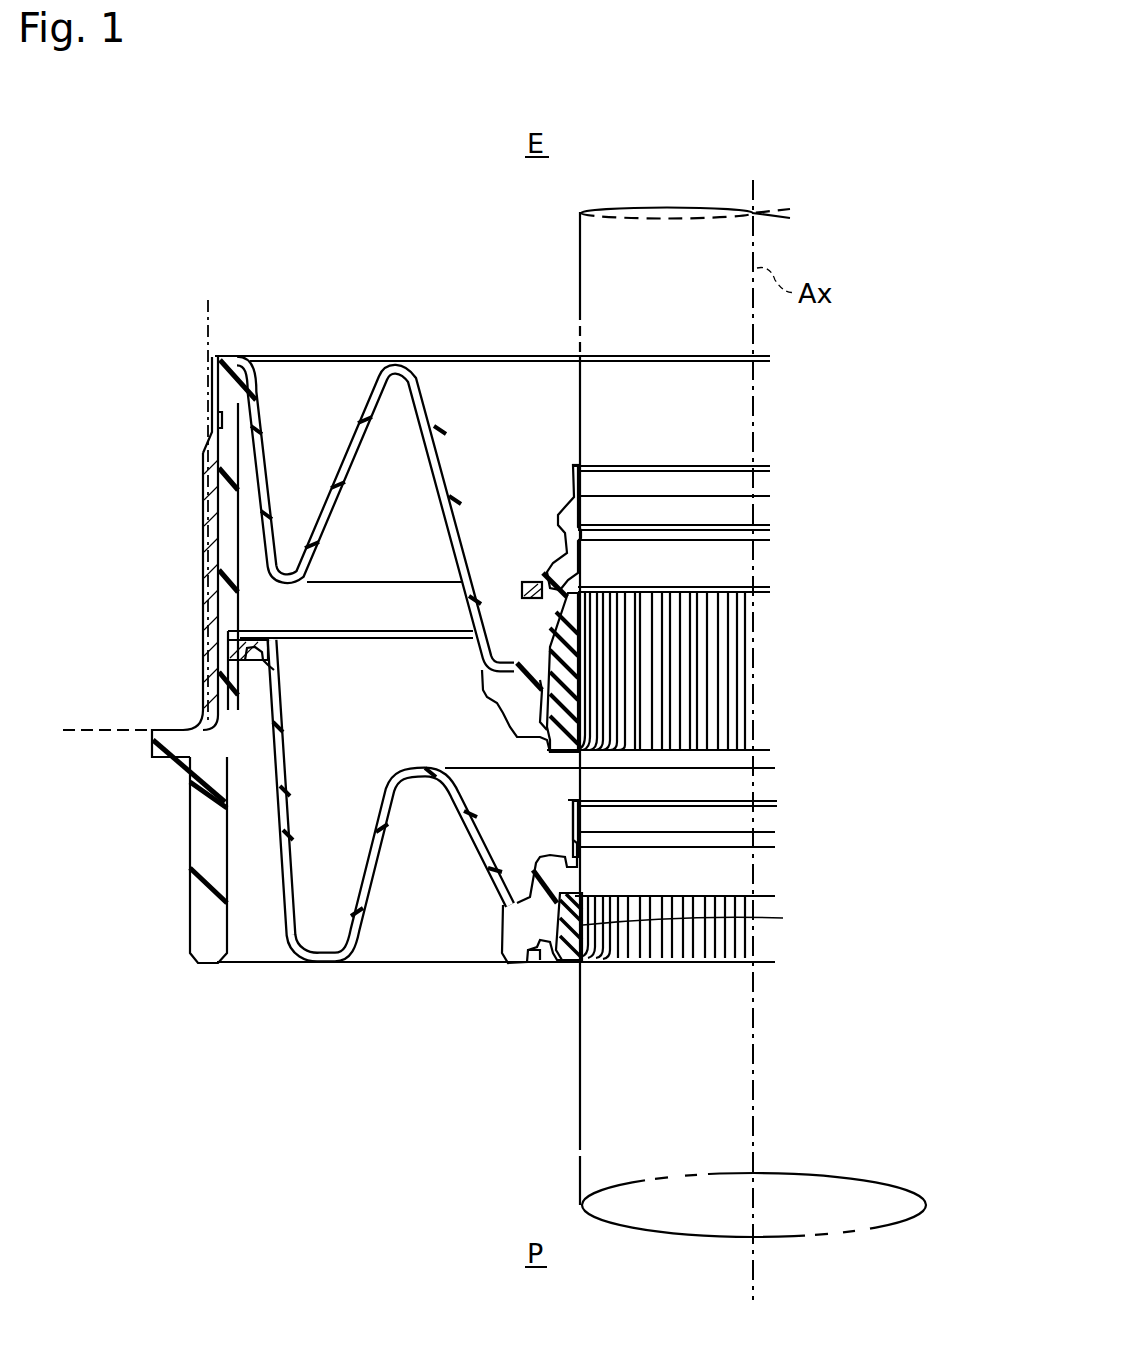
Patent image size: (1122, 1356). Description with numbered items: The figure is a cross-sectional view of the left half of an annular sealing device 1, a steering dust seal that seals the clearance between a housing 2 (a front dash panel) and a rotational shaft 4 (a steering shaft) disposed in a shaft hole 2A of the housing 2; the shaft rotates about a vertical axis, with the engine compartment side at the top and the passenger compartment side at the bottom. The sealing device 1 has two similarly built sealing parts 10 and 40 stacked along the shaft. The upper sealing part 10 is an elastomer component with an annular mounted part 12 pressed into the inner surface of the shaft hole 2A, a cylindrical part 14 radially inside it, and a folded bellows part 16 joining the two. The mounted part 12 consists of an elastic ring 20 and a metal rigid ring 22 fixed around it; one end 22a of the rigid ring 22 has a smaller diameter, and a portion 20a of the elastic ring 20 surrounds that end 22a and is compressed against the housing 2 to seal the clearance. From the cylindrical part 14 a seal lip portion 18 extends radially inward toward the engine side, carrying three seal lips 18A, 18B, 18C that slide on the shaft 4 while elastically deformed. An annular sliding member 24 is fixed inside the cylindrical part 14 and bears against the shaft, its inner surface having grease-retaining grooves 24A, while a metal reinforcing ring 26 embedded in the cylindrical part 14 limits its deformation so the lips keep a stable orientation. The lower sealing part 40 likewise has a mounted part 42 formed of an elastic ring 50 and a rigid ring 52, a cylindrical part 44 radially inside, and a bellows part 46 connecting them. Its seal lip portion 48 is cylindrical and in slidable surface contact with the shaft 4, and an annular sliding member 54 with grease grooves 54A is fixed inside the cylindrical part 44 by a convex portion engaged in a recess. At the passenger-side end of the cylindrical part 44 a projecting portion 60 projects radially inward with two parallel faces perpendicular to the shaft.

The sealing device 1 is at (289, 221).
The housing 2 is at (90, 733).
The shaft hole 2A is at (212, 318).
The rotational shaft 4 is at (580, 243).
The sealing part 10 is at (391, 324).
The mounted part 12 is at (230, 550).
The cylindrical part 14 is at (480, 698).
The bellows part 16 is at (338, 435).
The seal lip portion 18 is at (570, 478).
The seal lip 18A is at (583, 472).
The seal lip 18B is at (583, 528).
The seal lip 18C is at (583, 540).
The elastic ring 20 is at (232, 517).
The portion of the elastic ring 20a is at (215, 400).
The rigid ring 22 is at (218, 490).
The end of the rigid ring 22a is at (212, 428).
The sliding member 24 is at (578, 614).
The grooves 24A is at (633, 715).
The reinforcing ring 26 is at (528, 583).
The sealing part 40 is at (351, 1042).
The mounted part 42 is at (283, 703).
The cylindrical part 44 is at (503, 930).
The bellows part 46 is at (372, 810).
The seal lip portion 48 is at (572, 825).
The elastic ring 50 is at (268, 677).
The rigid ring 52 is at (240, 662).
The sliding member 54 is at (590, 965).
The grooves 54A is at (623, 953).
The projecting portion 60 is at (545, 968).